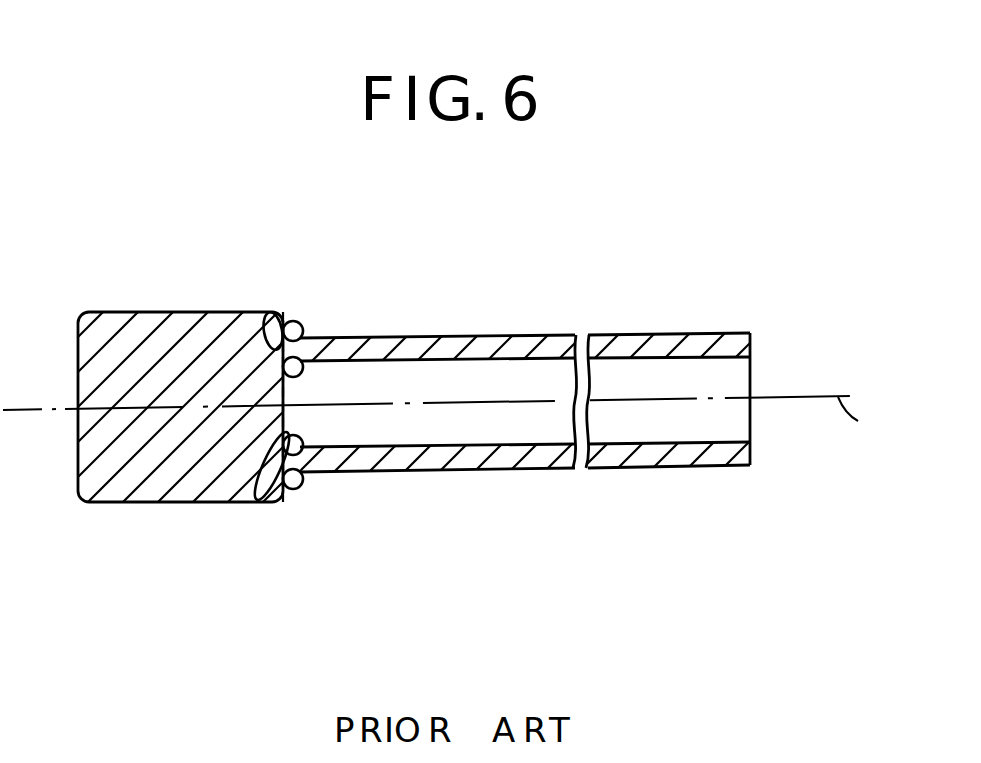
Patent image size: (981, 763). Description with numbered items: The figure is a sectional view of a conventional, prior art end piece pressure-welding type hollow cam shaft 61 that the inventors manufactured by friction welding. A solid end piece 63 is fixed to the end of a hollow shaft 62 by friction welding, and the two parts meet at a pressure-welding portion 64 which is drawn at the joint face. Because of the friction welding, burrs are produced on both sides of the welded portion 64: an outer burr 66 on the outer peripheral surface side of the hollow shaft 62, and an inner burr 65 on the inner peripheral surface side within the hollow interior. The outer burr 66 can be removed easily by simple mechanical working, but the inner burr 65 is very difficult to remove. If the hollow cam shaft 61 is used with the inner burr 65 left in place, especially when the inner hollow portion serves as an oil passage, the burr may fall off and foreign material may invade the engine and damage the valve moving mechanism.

The hollow cam shaft 61 is at (466, 434).
The hollow shaft 62 is at (507, 345).
The end piece 63 is at (186, 330).
The pressure-welding portion 64 is at (263, 340).
The inner burr 65 is at (299, 436).
The outer burr 66 is at (300, 338).